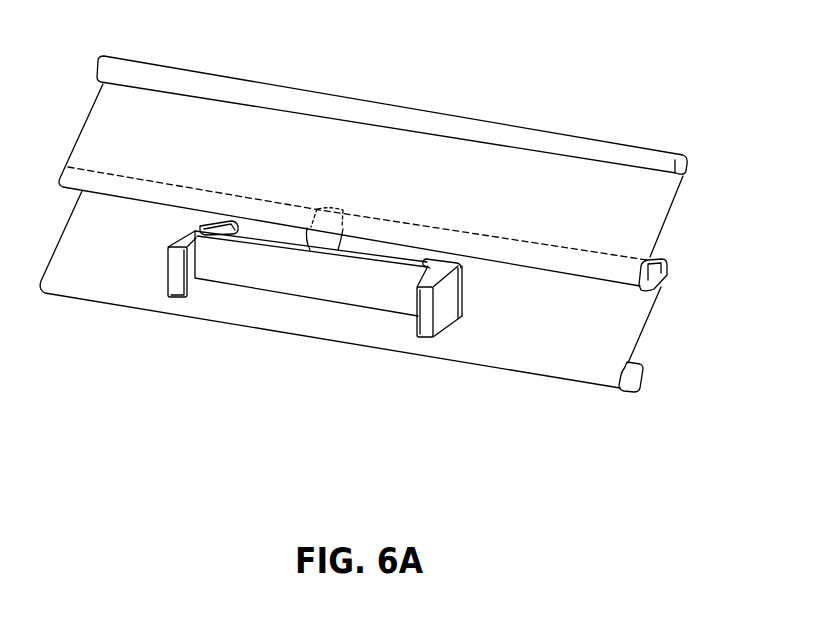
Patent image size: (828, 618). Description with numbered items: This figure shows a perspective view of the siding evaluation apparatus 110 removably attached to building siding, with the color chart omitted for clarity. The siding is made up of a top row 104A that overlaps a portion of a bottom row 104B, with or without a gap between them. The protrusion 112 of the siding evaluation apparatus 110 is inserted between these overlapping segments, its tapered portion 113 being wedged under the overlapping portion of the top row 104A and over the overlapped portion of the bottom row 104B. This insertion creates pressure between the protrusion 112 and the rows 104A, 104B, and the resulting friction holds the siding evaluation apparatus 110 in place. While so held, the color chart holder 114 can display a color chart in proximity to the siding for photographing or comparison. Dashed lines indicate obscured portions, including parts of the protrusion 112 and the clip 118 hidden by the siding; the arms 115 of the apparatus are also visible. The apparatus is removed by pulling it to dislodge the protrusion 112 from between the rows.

The top row 104A is at (643, 150).
The bottom row 104B is at (645, 328).
The siding evaluation apparatus 110 is at (312, 237).
The protrusion 112 is at (340, 246).
The tapered portion 113 is at (357, 213).
The color chart holder 114 is at (308, 298).
The arm 115 is at (173, 300).
The clip 118 is at (213, 222).